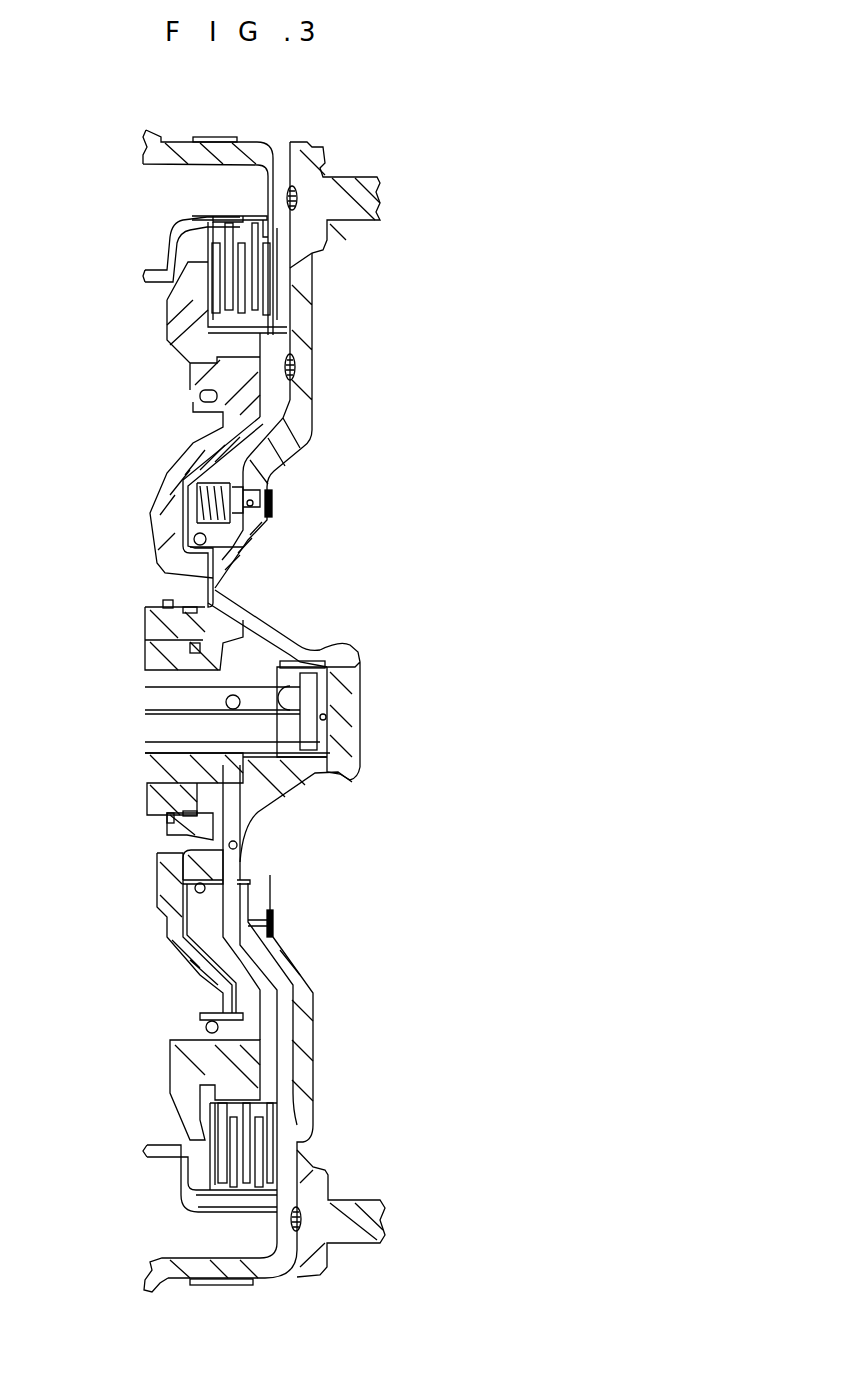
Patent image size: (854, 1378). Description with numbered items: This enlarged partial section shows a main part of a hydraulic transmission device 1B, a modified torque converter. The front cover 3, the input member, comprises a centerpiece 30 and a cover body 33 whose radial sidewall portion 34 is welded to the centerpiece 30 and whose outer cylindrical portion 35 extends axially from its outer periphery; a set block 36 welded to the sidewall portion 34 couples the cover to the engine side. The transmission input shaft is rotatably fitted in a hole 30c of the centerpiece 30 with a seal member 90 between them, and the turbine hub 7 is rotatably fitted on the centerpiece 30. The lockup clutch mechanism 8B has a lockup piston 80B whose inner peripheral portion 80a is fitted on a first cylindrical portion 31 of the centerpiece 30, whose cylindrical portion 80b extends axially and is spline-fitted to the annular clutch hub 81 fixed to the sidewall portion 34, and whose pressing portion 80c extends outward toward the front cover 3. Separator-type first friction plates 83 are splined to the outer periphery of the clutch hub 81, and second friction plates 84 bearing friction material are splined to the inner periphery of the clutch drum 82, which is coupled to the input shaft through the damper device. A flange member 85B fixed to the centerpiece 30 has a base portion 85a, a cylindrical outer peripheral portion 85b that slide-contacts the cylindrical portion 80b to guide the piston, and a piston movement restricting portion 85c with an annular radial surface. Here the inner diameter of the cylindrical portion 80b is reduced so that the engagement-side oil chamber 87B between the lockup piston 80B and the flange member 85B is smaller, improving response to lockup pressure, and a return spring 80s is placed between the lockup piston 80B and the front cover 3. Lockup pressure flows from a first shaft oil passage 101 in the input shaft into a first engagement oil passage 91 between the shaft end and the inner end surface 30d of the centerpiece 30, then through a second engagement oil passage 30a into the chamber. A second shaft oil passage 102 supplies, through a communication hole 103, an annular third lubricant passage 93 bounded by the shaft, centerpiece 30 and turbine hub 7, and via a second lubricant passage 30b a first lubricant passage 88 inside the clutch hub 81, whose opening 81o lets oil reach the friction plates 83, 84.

The hydraulic transmission device 1B is at (322, 1007).
The front cover 3 is at (275, 519).
The turbine hub 7 is at (248, 795).
The lockup clutch mechanism 8B is at (244, 209).
The centerpiece 30 is at (343, 644).
The second engagement oil passage 30a is at (290, 637).
The second lubricant passage 30b is at (240, 845).
The hole 30c is at (335, 802).
The inner end surface 30d is at (328, 717).
The first cylindrical portion 31 is at (262, 905).
The cover body 33 is at (314, 368).
The sidewall portion 34 is at (300, 436).
The outer cylindrical portion 35 is at (245, 148).
The set block 36 is at (355, 185).
The lockup piston 80B is at (166, 335).
The inner peripheral portion 80a is at (183, 897).
The cylindrical portion 80b is at (207, 1040).
The pressing portion 80c is at (197, 1142).
The return spring 80s is at (257, 548).
The clutch hub 81 is at (297, 333).
The opening 81o is at (307, 1130).
The clutch drum 82 is at (208, 215).
The first friction plates 83 is at (243, 250).
The second friction plates 84 is at (265, 262).
The flange member 85B is at (179, 452).
The base portion 85a is at (190, 833).
The outer peripheral portion 85b is at (210, 1015).
The piston movement restricting portion 85c is at (222, 993).
The engagement-side oil chamber 87B is at (252, 880).
The first lubricant passage 88 is at (240, 958).
The seal member 90 is at (337, 740).
The first engagement oil passage 91 is at (343, 774).
The third lubricant passage 93 is at (333, 665).
The first shaft oil passage 101 is at (175, 740).
The second shaft oil passage 102 is at (212, 705).
The communication hole 103 is at (322, 692).